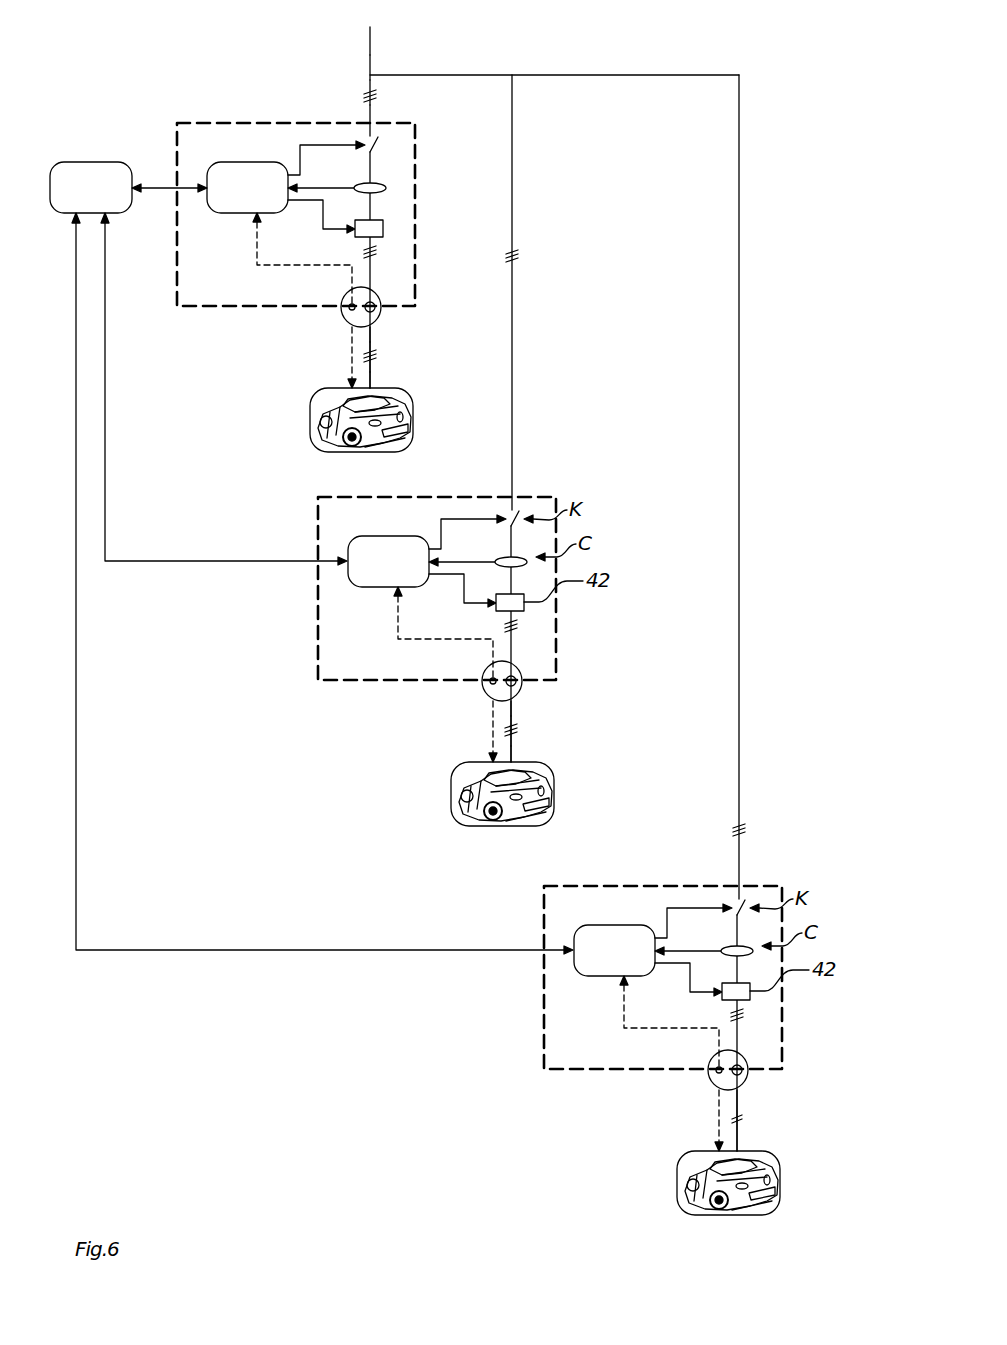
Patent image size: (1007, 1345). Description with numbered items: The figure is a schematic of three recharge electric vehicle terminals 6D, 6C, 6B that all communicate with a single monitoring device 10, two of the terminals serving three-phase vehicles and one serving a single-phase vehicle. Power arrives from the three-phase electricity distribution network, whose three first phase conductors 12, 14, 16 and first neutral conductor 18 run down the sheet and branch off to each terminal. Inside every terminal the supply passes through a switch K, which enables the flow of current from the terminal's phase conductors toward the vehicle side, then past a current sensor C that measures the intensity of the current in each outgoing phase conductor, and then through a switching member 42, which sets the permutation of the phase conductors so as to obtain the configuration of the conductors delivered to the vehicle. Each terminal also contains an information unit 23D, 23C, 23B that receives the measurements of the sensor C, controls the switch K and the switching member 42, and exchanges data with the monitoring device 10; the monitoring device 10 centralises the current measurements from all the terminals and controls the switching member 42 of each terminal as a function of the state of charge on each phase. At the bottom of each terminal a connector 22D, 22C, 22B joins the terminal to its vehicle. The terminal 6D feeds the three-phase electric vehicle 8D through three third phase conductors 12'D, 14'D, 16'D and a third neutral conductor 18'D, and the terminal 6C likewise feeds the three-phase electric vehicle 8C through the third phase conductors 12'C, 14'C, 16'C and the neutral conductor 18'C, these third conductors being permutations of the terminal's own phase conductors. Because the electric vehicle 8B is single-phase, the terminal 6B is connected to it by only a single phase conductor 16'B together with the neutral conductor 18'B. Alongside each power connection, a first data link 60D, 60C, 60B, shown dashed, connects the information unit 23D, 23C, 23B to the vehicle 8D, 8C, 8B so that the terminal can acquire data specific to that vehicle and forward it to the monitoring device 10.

The monitoring device 10 is at (91, 187).
The first phase conductor 12 is at (339, 62).
The first phase conductor 14 is at (339, 58).
The first phase conductor 16 is at (339, 82).
The first neutral conductor 18 is at (342, 110).
The recharge electric vehicle terminal 6D is at (177, 123).
The recharge electric vehicle terminal 6C is at (458, 564).
The recharge electric vehicle terminal 6B is at (683, 953).
The information unit 23D is at (247, 187).
The information unit 23C is at (388, 561).
The information unit 23B is at (614, 950).
The switch K is at (392, 145).
The current sensor C is at (404, 183).
The switching member 42 is at (383, 228).
The third phase conductor 12'D is at (432, 287).
The third phase conductor 14'D is at (432, 308).
The third phase conductor 16'D is at (429, 320).
The third neutral conductor 18'D is at (432, 351).
The third phase conductor 12'C is at (572, 661).
The third phase conductor 14'C is at (572, 682).
The third phase conductor 16'C is at (569, 694).
The third neutral conductor 18'C is at (572, 725).
The third phase conductor 16'B is at (782, 1116).
The third neutral conductor 18'B is at (784, 1134).
The connector 22D is at (343, 313).
The connector 22C is at (471, 685).
The connector 22B is at (697, 1074).
The first data link 60D is at (350, 347).
The first data link 60C is at (457, 731).
The first data link 60B is at (683, 1120).
The electric vehicle 8D is at (310, 432).
The electric vehicle 8C is at (477, 793).
The electric vehicle 8B is at (703, 1182).